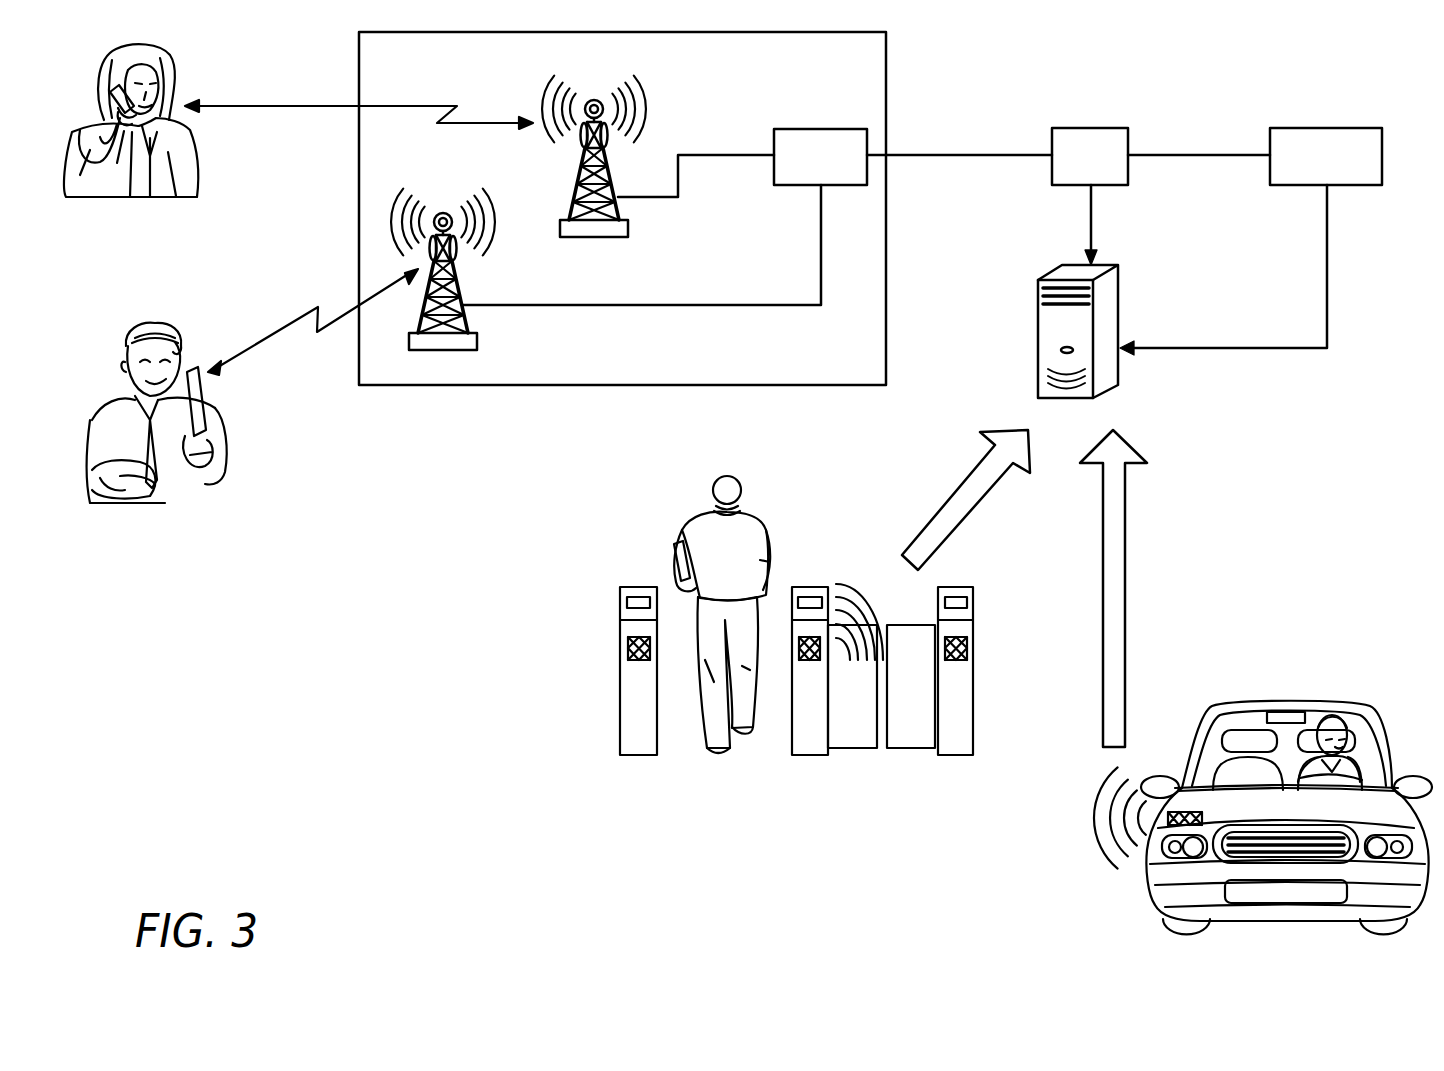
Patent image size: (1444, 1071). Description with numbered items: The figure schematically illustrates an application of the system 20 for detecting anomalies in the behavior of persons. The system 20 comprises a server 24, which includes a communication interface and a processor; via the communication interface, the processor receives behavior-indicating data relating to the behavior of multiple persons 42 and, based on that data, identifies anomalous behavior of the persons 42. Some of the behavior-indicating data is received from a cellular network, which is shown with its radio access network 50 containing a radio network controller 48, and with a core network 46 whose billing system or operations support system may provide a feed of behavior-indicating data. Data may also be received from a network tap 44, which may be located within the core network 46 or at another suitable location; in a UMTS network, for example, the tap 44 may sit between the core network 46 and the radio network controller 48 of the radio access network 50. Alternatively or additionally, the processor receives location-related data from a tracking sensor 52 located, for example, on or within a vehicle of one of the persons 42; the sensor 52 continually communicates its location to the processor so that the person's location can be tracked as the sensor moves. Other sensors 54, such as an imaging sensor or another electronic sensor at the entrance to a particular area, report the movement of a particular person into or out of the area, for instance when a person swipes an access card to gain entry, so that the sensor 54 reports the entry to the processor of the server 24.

The system 20 is at (1142, 267).
The server 24 is at (1119, 306).
The persons 42 is at (200, 158).
The network tap 44 is at (1090, 128).
The core network 46 is at (1326, 128).
The radio network controller 48 is at (820, 129).
The radio access network 50 is at (886, 96).
The tracking sensor 52 is at (1161, 798).
The sensor 54 is at (810, 661).